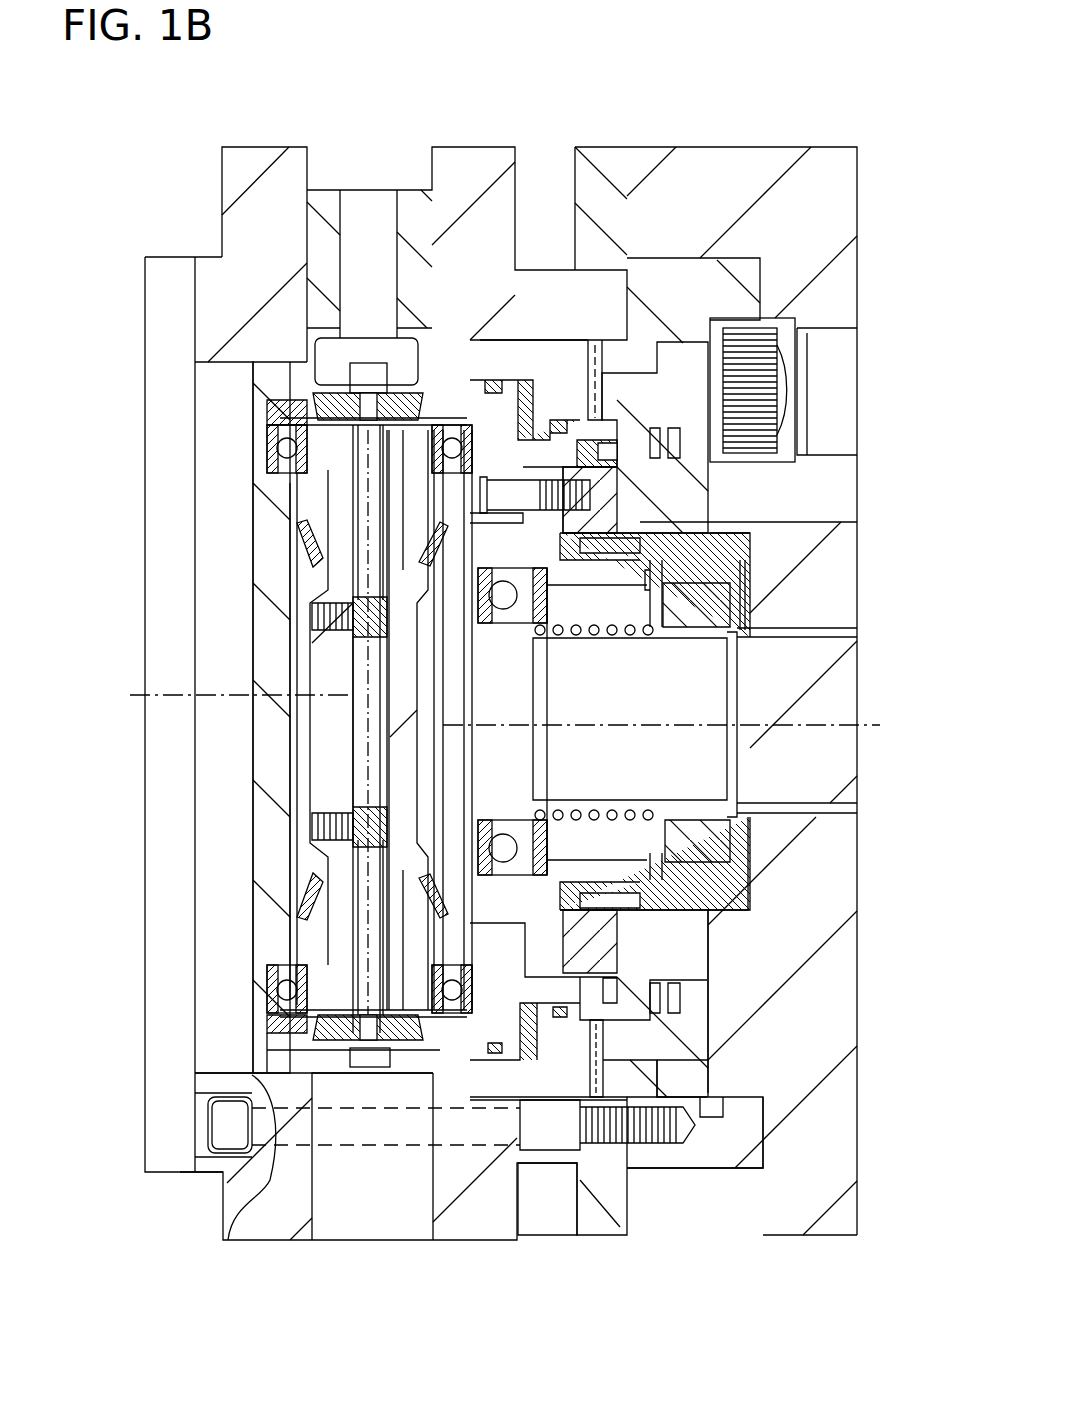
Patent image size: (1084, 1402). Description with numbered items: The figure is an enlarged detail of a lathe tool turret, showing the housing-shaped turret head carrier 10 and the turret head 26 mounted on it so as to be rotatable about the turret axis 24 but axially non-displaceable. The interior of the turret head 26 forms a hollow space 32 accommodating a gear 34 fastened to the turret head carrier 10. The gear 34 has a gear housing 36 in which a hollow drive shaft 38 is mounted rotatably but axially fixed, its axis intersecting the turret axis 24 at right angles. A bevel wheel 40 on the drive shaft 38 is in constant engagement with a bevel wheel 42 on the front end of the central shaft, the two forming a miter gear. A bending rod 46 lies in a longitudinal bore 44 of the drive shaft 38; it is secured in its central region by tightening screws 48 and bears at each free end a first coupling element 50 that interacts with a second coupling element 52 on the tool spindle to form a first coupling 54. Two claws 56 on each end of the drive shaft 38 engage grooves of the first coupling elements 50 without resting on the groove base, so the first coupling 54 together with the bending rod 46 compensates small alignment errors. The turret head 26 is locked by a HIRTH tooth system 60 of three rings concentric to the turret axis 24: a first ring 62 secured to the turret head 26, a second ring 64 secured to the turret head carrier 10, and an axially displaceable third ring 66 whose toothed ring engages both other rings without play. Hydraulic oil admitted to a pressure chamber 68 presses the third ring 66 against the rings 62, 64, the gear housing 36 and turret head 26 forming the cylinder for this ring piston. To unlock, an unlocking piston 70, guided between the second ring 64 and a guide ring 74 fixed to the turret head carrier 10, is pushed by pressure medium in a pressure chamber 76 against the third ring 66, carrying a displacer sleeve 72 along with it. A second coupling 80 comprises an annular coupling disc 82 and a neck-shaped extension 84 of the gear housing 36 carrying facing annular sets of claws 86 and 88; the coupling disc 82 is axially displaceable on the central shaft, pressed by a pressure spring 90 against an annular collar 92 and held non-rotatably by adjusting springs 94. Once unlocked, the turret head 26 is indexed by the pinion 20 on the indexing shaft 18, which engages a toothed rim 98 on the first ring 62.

The turret head carrier 10 is at (832, 118).
The indexing shaft 18 is at (828, 435).
The pinion 20 is at (755, 405).
The turret axis 24 is at (793, 723).
The turret head 26 is at (172, 1175).
The hollow space 32 is at (220, 398).
The gear 34 is at (297, 1038).
The gear housing 36 is at (262, 522).
The drive shaft 38 is at (365, 680).
The bevel wheel 40 is at (262, 565).
The bevel wheel 42 is at (450, 742).
The longitudinal bore 44 is at (363, 866).
The bending rod 46 is at (360, 918).
The adjusting screw 48 is at (330, 630).
The first coupling element 50 is at (300, 386).
The second coupling element 52 is at (368, 336).
The first coupling 54 is at (305, 367).
The claws 56 is at (330, 420).
The HIRTH tooth system 60 is at (693, 1077).
The first ring 62 is at (717, 1163).
The second ring 64 is at (745, 1110).
The third ring 66 is at (543, 1155).
The pressure chamber 68 is at (557, 1083).
The unlocking piston 70 is at (627, 430).
The displacer sleeve 72 is at (700, 557).
The guide ring 74 is at (665, 486).
The pressure chamber 76 is at (613, 1043).
The second coupling 80 is at (635, 600).
The coupling disc 82 is at (717, 610).
The neck-shaped extension 84 is at (597, 575).
The claws 86 is at (703, 593).
The claws 88 is at (735, 525).
The pressure spring 90 is at (558, 638).
The annular collar 92 is at (733, 760).
The adjusting springs 94 is at (795, 640).
The toothed rim 98 is at (742, 318).